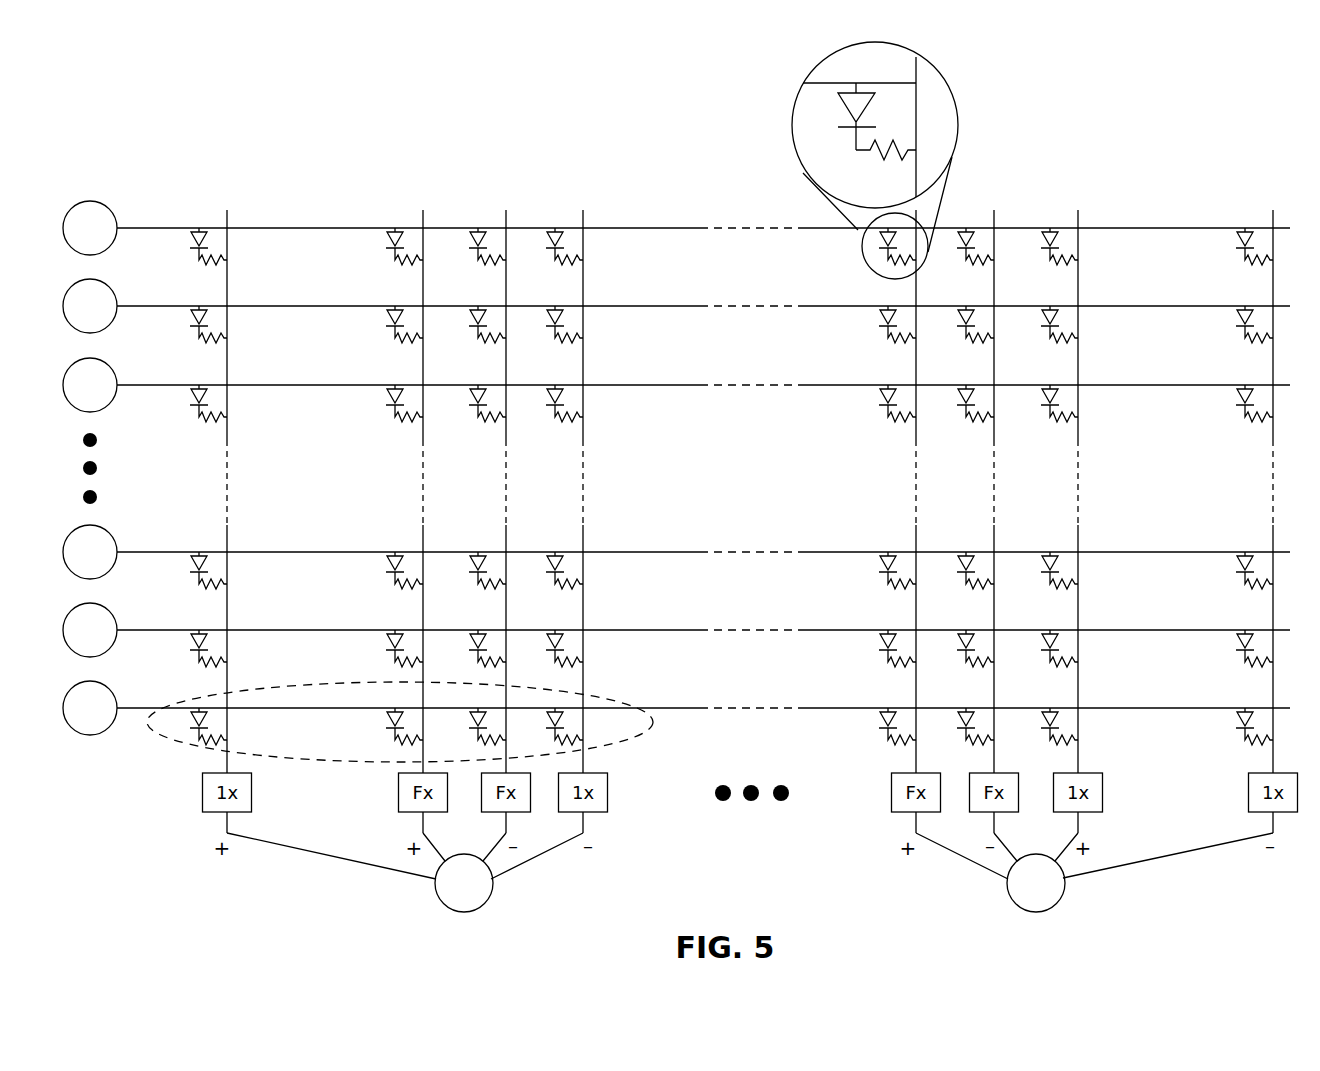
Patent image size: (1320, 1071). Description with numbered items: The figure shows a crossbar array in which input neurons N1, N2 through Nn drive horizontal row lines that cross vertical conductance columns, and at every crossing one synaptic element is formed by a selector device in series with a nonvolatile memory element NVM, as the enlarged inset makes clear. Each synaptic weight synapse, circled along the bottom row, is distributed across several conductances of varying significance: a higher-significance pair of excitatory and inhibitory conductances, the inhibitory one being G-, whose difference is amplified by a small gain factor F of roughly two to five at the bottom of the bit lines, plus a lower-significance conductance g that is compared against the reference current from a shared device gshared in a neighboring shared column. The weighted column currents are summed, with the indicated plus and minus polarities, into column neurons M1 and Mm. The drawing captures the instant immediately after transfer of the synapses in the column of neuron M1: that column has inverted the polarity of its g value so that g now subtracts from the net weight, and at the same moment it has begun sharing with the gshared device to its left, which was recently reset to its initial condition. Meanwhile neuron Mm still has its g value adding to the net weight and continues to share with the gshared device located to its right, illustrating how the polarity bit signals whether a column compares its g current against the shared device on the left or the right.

The input neuron N1 is at (90, 228).
The input neuron N2 is at (90, 306).
The input neuron Nn is at (90, 708).
The shared conductance device gshared is at (676, 460).
The inhibitory conductance G- is at (492, 235).
The lower-significance conductance g is at (568, 236).
The synaptic weight synapse is at (160, 743).
The column neuron M1 is at (405, 872).
The column neuron Mm is at (1094, 872).
The selector device selector is at (838, 110).
The nonvolatile memory element NVM is at (910, 142).